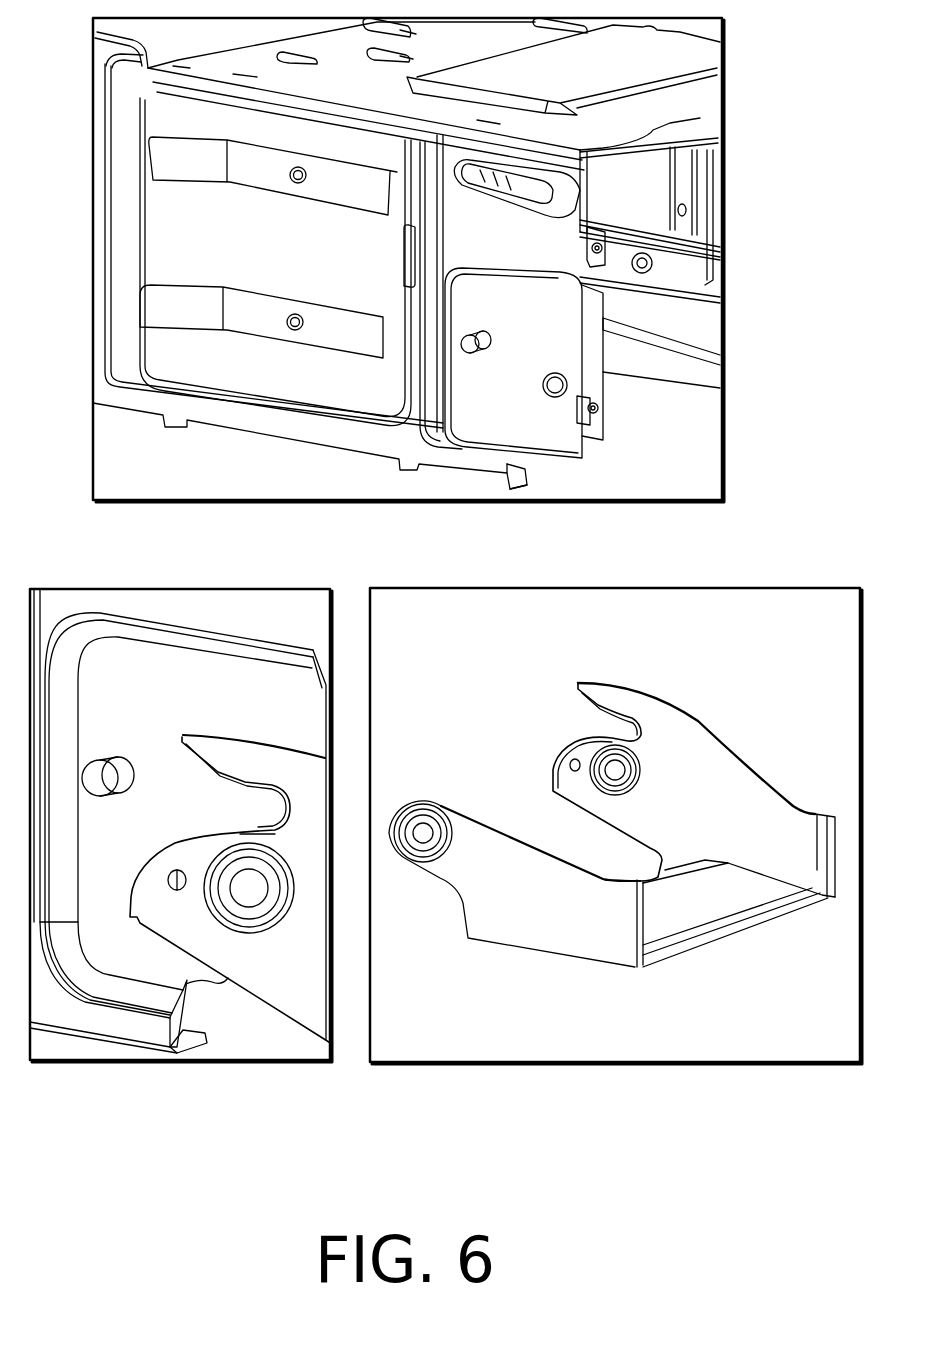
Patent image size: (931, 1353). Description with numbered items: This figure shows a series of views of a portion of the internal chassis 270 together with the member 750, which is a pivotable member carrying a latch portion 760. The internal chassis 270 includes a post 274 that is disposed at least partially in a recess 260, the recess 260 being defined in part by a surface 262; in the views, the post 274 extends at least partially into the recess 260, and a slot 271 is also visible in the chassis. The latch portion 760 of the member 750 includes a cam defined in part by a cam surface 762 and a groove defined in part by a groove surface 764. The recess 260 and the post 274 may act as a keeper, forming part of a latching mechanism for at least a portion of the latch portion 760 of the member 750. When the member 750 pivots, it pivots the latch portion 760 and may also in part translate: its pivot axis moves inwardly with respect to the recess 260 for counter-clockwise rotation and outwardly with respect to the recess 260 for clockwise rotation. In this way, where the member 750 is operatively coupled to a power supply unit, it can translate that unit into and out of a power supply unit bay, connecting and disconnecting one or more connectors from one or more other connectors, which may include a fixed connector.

The recess 260 is at (513, 420).
The surface 262 is at (450, 355).
The internal chassis 270 is at (436, 112).
The slot 271 is at (560, 194).
The post 274 is at (487, 337).
The member 750 is at (723, 767).
The latch portion 760 is at (472, 848).
The cam surface 762 is at (225, 732).
The groove surface 764 is at (235, 782).